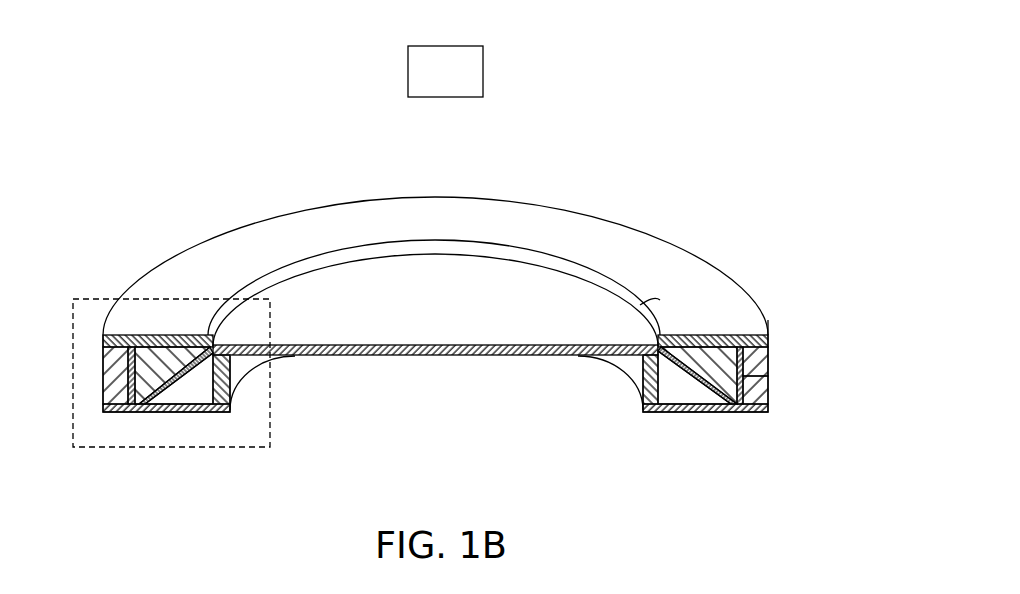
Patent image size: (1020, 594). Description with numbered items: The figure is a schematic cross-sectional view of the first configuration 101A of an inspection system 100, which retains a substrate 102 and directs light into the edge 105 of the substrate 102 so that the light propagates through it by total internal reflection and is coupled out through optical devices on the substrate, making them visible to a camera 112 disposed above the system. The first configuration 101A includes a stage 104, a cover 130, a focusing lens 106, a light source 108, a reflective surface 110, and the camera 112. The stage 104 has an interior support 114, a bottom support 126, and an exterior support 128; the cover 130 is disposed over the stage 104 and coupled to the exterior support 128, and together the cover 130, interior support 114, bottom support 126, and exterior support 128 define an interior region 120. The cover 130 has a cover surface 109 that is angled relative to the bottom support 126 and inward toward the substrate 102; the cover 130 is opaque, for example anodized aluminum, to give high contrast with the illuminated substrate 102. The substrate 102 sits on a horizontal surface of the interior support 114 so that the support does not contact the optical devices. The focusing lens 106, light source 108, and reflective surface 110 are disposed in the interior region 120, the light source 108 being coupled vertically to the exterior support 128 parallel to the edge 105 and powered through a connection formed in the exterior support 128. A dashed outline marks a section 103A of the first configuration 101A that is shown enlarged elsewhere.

The inspection system 100 is at (597, 165).
The first configuration 101A is at (748, 172).
The substrate 102 is at (448, 343).
The section 103A is at (131, 448).
The stage 104 is at (773, 352).
The edge 105 is at (642, 310).
The focusing lens 106 is at (707, 360).
The light source 108 is at (770, 382).
The cover surface 109 is at (342, 258).
The reflective surface 110 is at (707, 407).
The camera 112 is at (425, 79).
The interior support 114 is at (650, 375).
The interior region 120 is at (200, 390).
The bottom support 126 is at (680, 413).
The exterior support 128 is at (770, 372).
The cover 130 is at (768, 325).